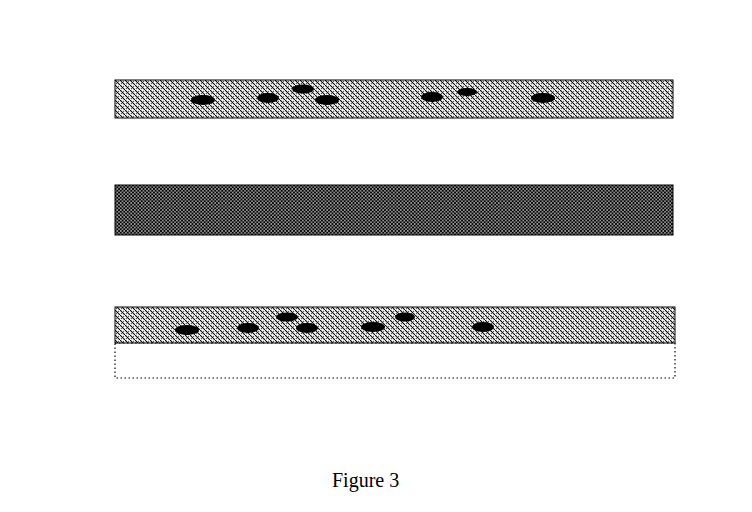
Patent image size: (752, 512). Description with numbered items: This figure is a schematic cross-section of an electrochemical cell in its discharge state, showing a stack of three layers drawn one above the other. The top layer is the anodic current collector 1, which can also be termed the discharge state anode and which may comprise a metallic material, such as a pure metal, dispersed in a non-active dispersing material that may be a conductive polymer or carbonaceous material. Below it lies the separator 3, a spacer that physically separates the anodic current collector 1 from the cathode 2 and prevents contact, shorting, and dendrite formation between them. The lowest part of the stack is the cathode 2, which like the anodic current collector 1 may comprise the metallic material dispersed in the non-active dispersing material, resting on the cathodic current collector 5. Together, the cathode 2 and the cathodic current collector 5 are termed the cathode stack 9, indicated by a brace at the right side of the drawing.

The anodic current collector 1 is at (118, 103).
The cathode 2 is at (116, 319).
The separator 3 is at (116, 214).
The cathodic current collector 5 is at (116, 369).
The cathode stack 9 is at (690, 305).